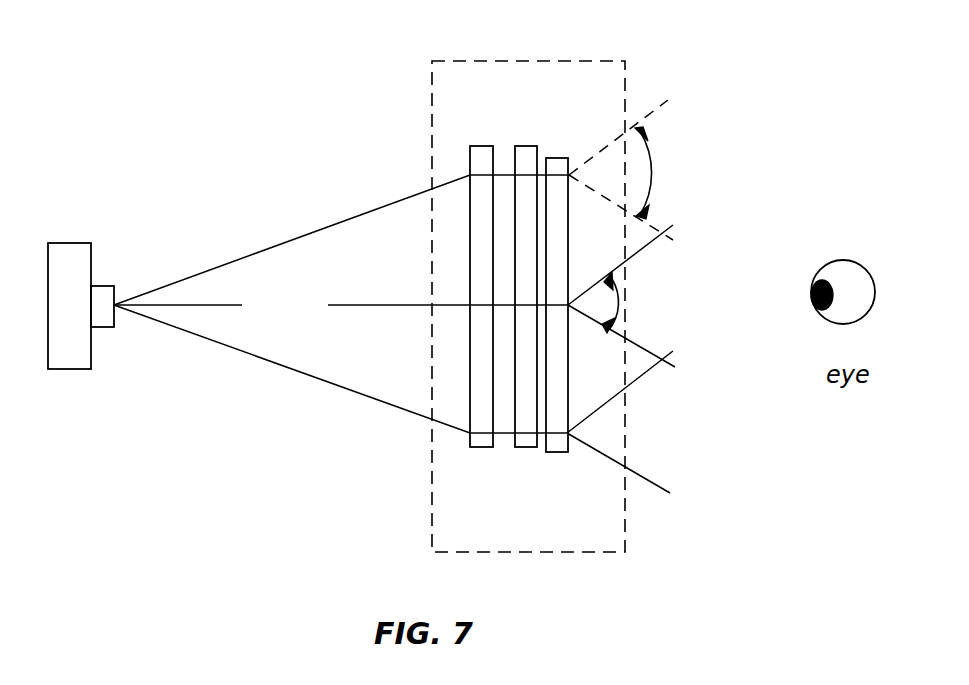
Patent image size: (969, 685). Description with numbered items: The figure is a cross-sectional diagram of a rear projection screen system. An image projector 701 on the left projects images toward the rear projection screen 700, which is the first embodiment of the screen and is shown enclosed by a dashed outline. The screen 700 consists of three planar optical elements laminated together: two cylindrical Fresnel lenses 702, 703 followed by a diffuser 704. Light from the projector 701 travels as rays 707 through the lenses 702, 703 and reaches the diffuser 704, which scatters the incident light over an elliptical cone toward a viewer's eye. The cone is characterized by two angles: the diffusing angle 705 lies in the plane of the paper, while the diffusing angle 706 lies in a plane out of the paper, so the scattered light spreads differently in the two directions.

The rear projection screen 700 is at (552, 61).
The image projector 701 is at (80, 370).
The cylindrical Fresnel lens 702 is at (472, 146).
The cylindrical Fresnel lens 703 is at (527, 447).
The diffuser 704 is at (551, 158).
The diffusing angle 705 is at (618, 298).
The diffusing angle 706 is at (652, 172).
The light rays 707 is at (341, 304).